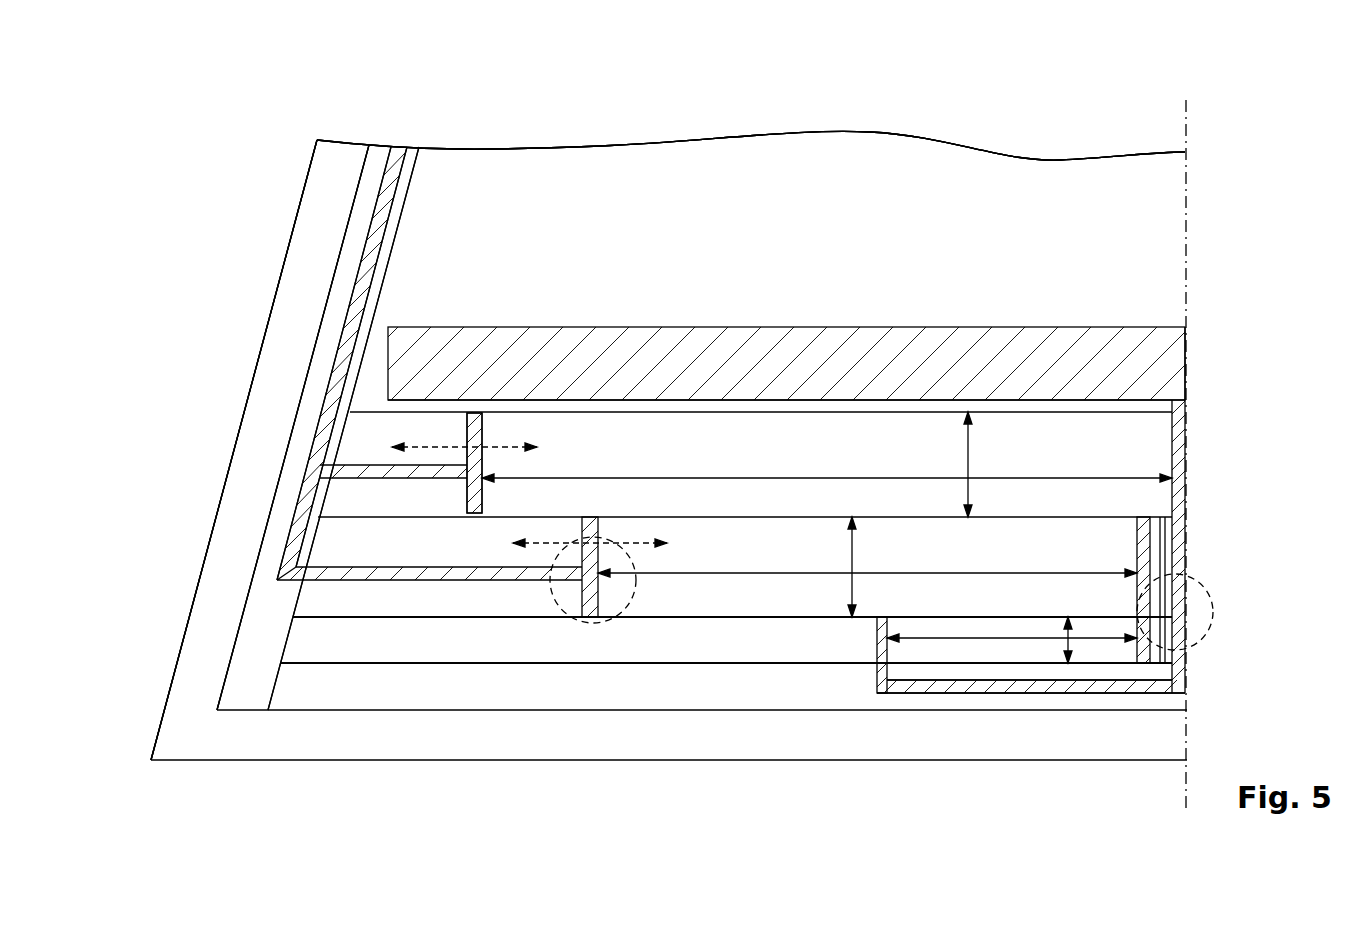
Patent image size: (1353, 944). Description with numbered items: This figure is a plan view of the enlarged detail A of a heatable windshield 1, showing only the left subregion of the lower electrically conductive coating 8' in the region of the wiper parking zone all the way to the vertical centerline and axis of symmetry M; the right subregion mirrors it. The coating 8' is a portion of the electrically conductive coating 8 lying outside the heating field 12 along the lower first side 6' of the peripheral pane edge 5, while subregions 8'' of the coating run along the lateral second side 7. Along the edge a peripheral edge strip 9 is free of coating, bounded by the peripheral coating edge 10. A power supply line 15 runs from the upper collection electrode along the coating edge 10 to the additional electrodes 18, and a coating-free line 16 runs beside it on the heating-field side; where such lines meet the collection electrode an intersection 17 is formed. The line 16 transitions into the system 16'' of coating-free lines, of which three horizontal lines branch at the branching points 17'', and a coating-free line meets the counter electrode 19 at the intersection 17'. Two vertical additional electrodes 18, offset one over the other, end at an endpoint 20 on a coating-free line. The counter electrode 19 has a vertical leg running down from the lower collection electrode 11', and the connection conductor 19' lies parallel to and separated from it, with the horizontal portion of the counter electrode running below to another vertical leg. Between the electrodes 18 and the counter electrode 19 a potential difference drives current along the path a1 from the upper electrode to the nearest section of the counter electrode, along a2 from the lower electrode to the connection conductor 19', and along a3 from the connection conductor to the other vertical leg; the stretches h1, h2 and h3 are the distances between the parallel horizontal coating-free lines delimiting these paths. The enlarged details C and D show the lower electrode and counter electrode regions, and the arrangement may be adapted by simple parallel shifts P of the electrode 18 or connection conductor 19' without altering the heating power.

The windshield 1 is at (1036, 126).
The enlarged detail of the windshield A is at (751, 145).
The peripheral pane edge 5 is at (246, 420).
The lateral second side of the pane edge 7 is at (234, 450).
The lower first side of the pane edge 6' is at (669, 482).
The electrically conductive coating 8 is at (751, 162).
The lower electrically conductive coating 8' is at (726, 720).
The subregions of the electrically conductive coating 8'' is at (312, 475).
The peripheral edge strip 9 is at (297, 320).
The peripheral coating edge 10 is at (307, 377).
The lower collection electrode 11' is at (786, 237).
The heating field 12 is at (751, 145).
The power supply line 15 is at (360, 282).
The coating-free line 16 is at (323, 428).
The system of coating-free lines 16'' is at (726, 449).
The intersection of the coating-free lines with the collection electrode 17 is at (1199, 510).
The intersection of a coating-free line with a counter electrode 17' is at (852, 720).
The branching point of a coating-free line 17'' is at (356, 428).
The additional electrode 18 is at (590, 618).
The counter electrode 19 is at (1031, 743).
The connection conductor 19' is at (1170, 683).
The endpoint of an additional electrode or counter electrode 20 is at (474, 463).
The vertical centerline and axis of symmetry M is at (1190, 215).
The parallel shift P is at (539, 496).
The enlarged detail of the windshield C is at (552, 625).
The enlarged detail of the windshield D is at (1205, 590).
The stretch vertical to the horizontal current path a1 h1 is at (968, 455).
The stretch vertical to the horizontal current path a2 h2 is at (860, 560).
The stretch vertical to the horizontal current path a3 h3 is at (1070, 650).
The length of the current path a1 is at (827, 484).
The length of a current path a2 is at (867, 583).
The length of a current path a3 is at (1012, 645).